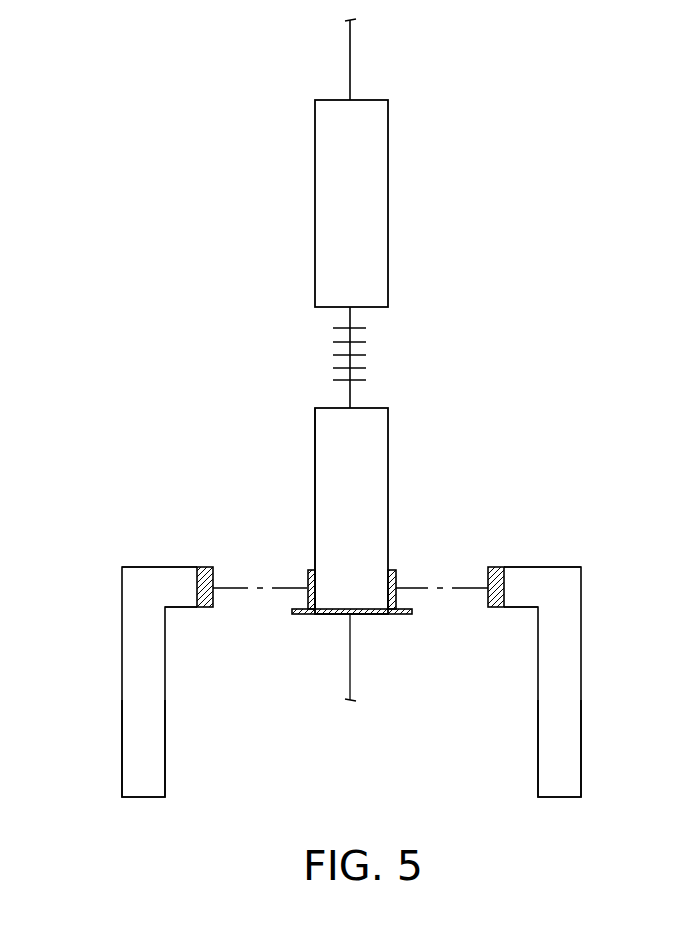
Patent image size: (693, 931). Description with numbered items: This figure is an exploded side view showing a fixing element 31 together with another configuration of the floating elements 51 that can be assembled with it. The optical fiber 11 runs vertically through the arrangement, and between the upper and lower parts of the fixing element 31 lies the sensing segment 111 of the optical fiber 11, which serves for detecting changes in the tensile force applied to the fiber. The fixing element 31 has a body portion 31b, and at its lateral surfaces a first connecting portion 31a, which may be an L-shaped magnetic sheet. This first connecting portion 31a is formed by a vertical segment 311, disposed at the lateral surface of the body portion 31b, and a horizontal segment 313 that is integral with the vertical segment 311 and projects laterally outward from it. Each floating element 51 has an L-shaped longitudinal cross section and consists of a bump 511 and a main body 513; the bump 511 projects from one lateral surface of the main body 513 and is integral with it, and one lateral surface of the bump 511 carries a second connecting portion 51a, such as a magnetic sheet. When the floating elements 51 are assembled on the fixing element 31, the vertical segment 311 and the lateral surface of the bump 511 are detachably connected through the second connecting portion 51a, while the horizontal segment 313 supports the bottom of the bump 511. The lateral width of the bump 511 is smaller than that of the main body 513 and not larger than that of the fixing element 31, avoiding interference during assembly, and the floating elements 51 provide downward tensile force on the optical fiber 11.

The optical fiber 11 is at (350, 52).
The sensing segment 111 is at (360, 358).
The fixing element 31 is at (378, 192).
The first connecting portion 31a is at (396, 571).
The body portion 31b is at (327, 462).
The vertical segment 311 is at (308, 571).
The horizontal segment 313 is at (302, 615).
The floating element 51 is at (126, 697).
The bump 511 is at (181, 577).
The second connecting portion 51a is at (207, 610).
The main body 513 is at (155, 772).